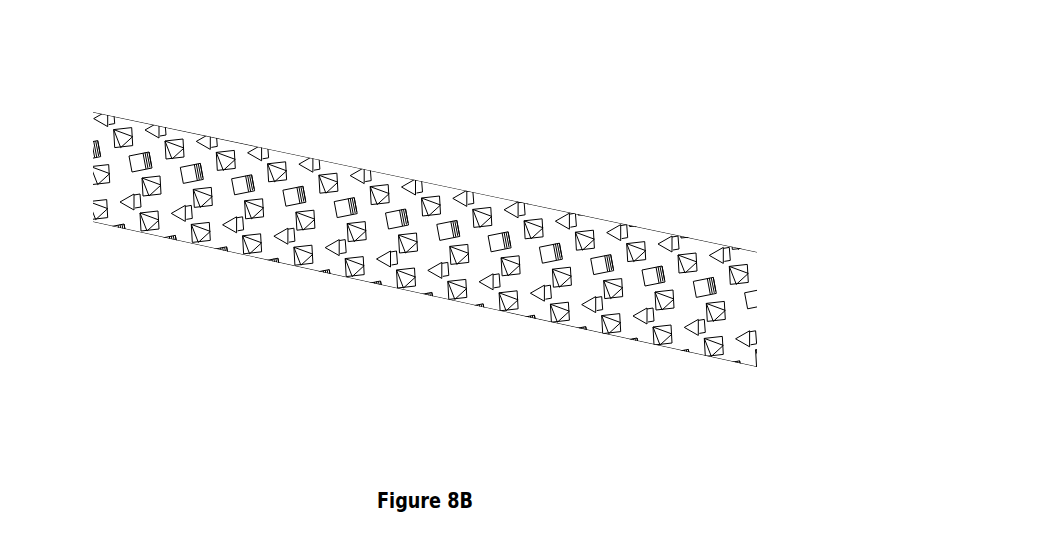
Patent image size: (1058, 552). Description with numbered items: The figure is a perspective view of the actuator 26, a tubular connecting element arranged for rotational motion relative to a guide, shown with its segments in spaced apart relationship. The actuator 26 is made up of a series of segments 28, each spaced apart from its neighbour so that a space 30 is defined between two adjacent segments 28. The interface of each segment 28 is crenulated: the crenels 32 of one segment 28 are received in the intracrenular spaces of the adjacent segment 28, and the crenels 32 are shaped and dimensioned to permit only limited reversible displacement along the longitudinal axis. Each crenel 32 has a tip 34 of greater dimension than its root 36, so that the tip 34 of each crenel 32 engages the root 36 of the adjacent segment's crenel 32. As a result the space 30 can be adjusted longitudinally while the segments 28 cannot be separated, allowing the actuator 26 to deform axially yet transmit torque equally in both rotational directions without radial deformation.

The actuator 26 is at (583, 160).
The segments 28 is at (267, 238).
The space 30 is at (462, 288).
The crenels 32 is at (289, 217).
The tip of crenel 34 is at (352, 212).
The root of crenel 36 is at (375, 217).